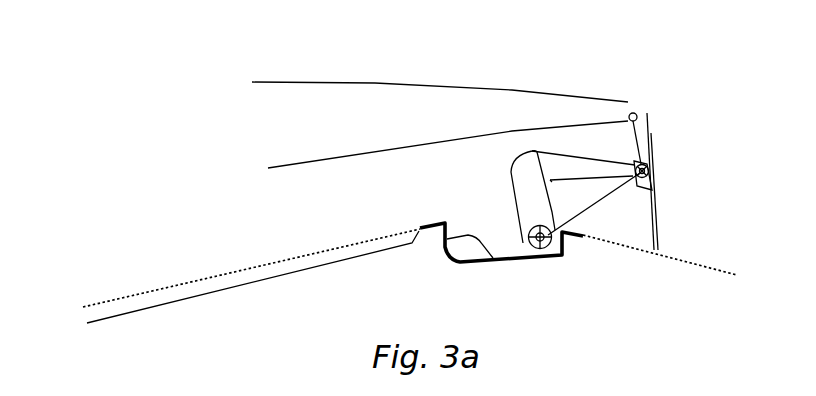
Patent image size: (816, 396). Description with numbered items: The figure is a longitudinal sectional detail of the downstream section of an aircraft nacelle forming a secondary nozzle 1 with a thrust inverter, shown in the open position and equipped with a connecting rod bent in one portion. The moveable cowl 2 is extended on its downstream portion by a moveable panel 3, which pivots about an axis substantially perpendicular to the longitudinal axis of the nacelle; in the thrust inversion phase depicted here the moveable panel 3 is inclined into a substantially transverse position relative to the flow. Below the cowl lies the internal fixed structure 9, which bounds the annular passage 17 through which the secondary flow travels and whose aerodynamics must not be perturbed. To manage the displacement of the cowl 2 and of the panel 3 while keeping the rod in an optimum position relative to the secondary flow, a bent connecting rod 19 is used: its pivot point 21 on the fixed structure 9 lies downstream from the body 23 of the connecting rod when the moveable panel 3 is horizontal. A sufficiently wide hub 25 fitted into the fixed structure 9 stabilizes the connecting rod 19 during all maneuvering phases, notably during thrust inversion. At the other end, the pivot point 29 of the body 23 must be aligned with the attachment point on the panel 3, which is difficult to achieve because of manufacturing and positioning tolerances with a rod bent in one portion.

The secondary nozzle 1 is at (125, 178).
The moveable cowl 2 is at (375, 82).
The moveable panel 3 is at (654, 137).
The internal fixed structure 9 is at (288, 263).
The annular passage 17 is at (178, 252).
The bent connecting rod 19 is at (573, 195).
The pivot point 21 is at (562, 260).
The body of the connecting rod 23 is at (582, 167).
The hub 25 is at (524, 250).
The pivot point of the connecting rod body 29 is at (655, 182).